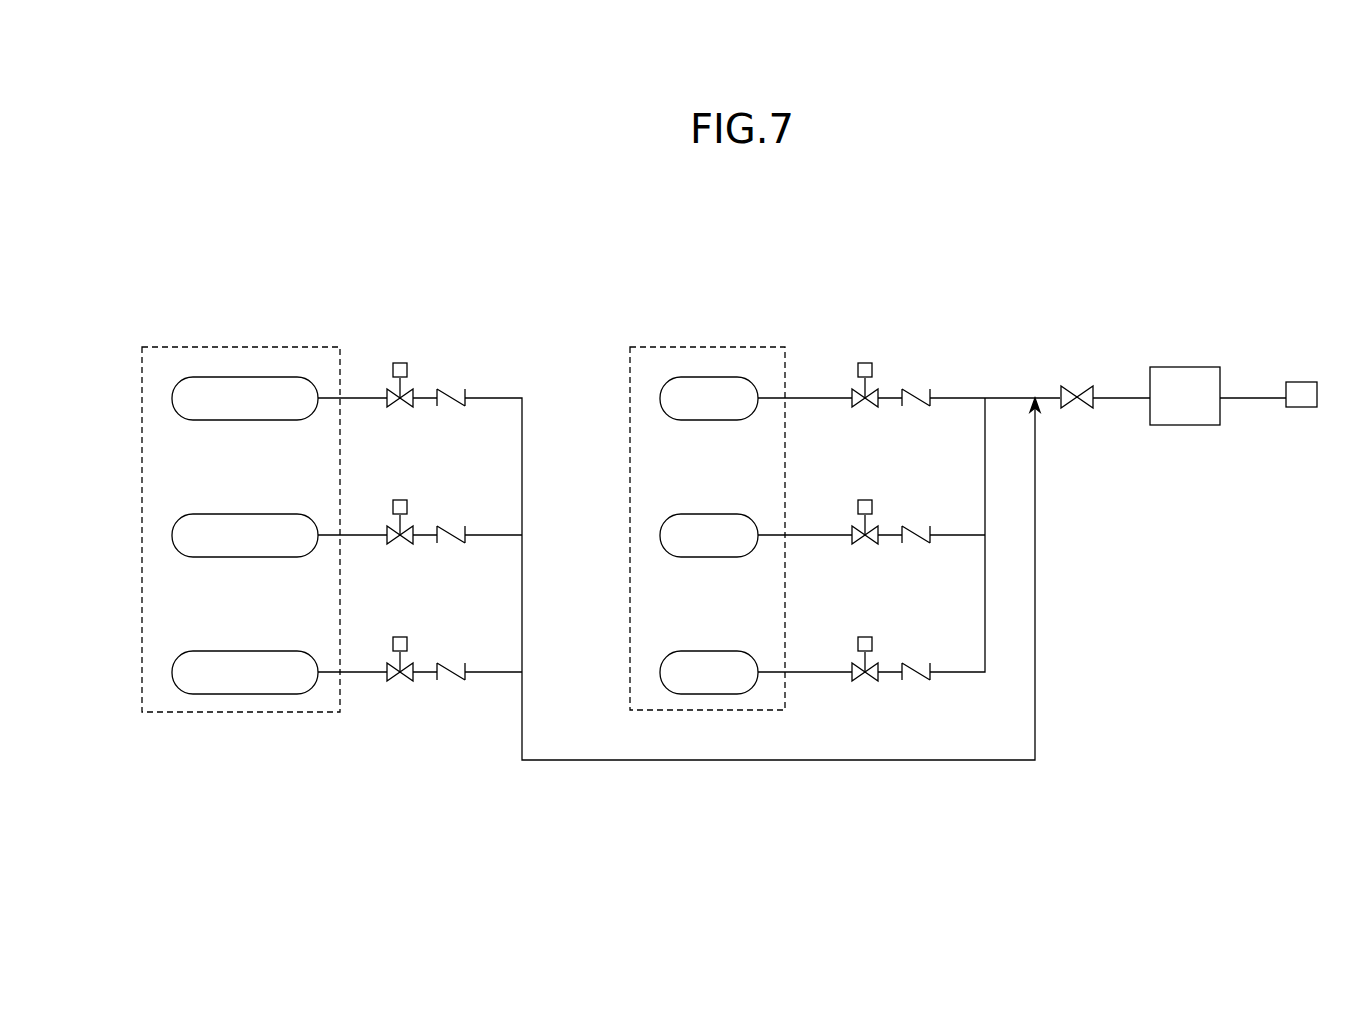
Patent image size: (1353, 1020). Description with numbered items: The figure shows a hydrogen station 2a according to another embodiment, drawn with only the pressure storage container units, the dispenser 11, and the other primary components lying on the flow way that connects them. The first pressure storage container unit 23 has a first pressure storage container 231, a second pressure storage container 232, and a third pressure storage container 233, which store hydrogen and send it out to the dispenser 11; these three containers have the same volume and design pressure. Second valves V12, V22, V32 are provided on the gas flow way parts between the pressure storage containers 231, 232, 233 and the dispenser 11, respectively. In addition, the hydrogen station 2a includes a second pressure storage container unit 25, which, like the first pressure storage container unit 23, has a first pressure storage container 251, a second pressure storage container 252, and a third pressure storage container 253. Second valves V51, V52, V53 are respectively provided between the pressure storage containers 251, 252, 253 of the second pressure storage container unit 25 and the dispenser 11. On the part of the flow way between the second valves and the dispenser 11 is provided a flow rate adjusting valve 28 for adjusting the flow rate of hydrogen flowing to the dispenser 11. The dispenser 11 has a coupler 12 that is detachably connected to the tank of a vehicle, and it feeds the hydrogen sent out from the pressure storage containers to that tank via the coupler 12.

The hydrogen station 2a is at (392, 310).
The second pressure storage container unit 25 is at (246, 342).
The first pressure storage container unit 23 is at (682, 342).
The first pressure storage container 251 is at (172, 408).
The second pressure storage container 252 is at (172, 545).
The third pressure storage container 253 is at (172, 682).
The first pressure storage container 231 is at (660, 410).
The second pressure storage container 232 is at (660, 547).
The third pressure storage container 233 is at (660, 684).
The second valve V51 is at (403, 363).
The second valve V52 is at (403, 500).
The second valve V53 is at (403, 637).
The second valve V12 is at (868, 363).
The second valve V22 is at (868, 500).
The second valve V32 is at (868, 637).
The flow rate adjusting valve 28 is at (1080, 392).
The dispenser 11 is at (1175, 367).
The coupler 12 is at (1298, 382).